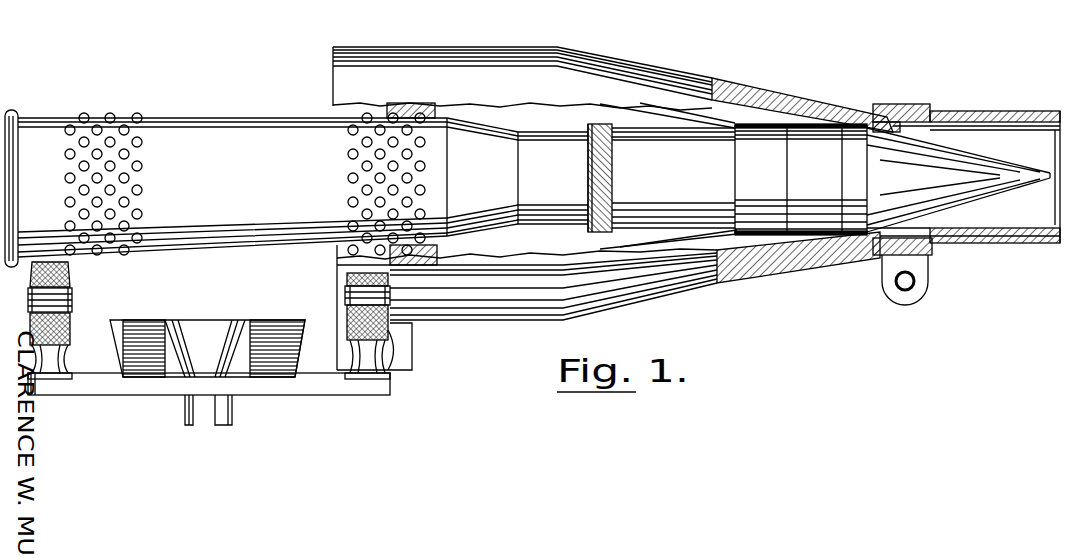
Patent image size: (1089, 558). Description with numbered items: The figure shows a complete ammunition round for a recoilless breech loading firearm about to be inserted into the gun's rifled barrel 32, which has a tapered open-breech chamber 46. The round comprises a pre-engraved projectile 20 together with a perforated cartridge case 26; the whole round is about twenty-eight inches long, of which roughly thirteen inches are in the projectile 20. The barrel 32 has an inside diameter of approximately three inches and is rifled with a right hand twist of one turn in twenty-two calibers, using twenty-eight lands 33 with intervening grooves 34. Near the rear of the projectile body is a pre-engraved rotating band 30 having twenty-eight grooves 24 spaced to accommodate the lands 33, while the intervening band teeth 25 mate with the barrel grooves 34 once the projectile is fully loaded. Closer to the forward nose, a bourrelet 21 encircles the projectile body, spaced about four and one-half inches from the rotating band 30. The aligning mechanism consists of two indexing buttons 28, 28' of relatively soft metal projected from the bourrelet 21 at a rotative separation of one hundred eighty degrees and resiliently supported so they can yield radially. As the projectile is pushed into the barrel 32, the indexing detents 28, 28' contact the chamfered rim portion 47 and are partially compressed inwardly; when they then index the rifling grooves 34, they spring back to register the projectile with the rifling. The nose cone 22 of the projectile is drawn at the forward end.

The pre-engraved projectile 20 is at (692, 155).
The bourrelet 21 is at (746, 178).
The nozzle cone 22 is at (958, 180).
The grooves 24 is at (587, 191).
The band teeth 25 is at (588, 178).
The cartridge case 26 is at (210, 135).
The indexing button 28 is at (801, 267).
The indexing button 28' is at (801, 97).
The rotating band 30 is at (613, 185).
The barrel 32 is at (1012, 111).
The lands 33 is at (975, 246).
The grooves 34 is at (1013, 246).
The tapered open-breech chamber 46 is at (415, 56).
The chamfered rim portion 47 is at (891, 106).